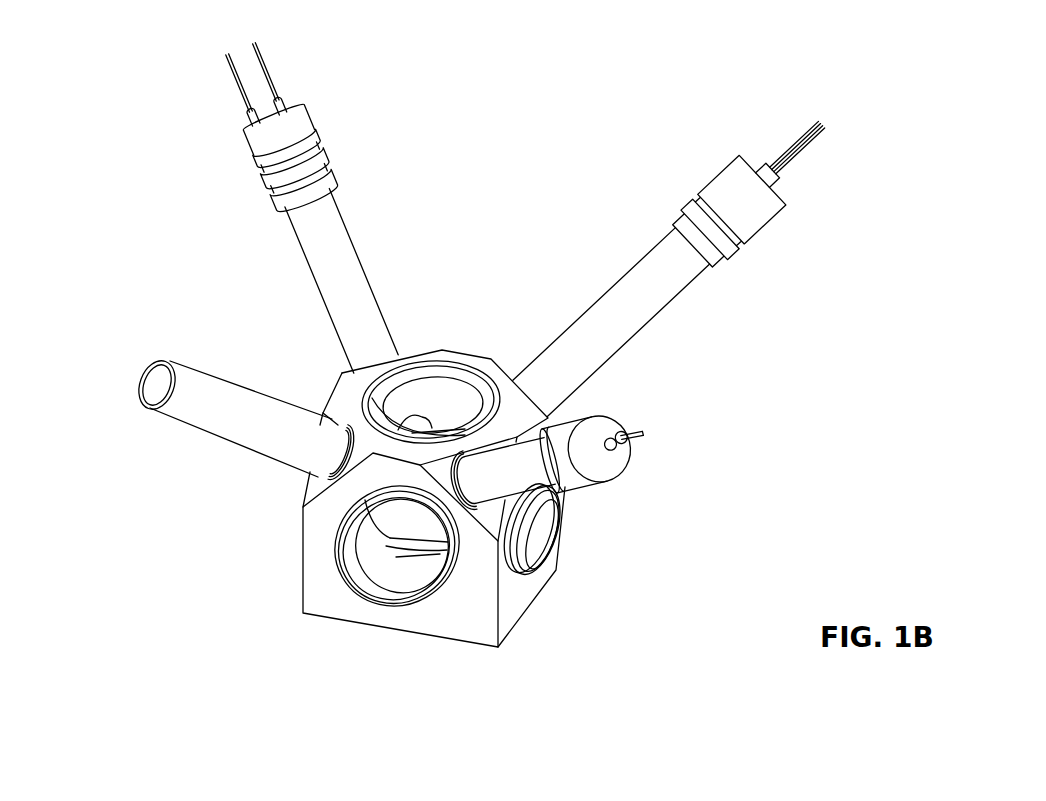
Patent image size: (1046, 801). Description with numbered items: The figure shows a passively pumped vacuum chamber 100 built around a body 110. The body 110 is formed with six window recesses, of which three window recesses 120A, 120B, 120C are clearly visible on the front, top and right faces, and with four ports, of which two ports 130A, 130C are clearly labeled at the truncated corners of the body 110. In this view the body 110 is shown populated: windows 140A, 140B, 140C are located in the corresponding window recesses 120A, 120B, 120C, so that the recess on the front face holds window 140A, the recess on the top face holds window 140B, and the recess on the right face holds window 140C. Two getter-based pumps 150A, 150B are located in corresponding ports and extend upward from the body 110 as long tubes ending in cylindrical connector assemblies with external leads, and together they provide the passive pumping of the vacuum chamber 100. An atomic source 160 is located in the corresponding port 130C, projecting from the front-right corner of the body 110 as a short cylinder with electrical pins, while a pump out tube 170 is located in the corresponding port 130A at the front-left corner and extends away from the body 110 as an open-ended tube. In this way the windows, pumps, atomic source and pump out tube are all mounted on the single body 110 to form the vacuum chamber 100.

The vacuum chamber 100 is at (454, 33).
The body 110 is at (288, 579).
The window recess 120A is at (375, 575).
The window recess 120B is at (487, 386).
The window recess 120C is at (531, 563).
The port 130A is at (328, 417).
The port 130C is at (478, 514).
The window 140A is at (412, 539).
The window 140B is at (432, 420).
The window 140C is at (534, 523).
The getter-based pump 150A is at (251, 163).
The getter-based pump 150B is at (781, 227).
The atomic source 160 is at (638, 449).
The pump out tube 170 is at (146, 364).